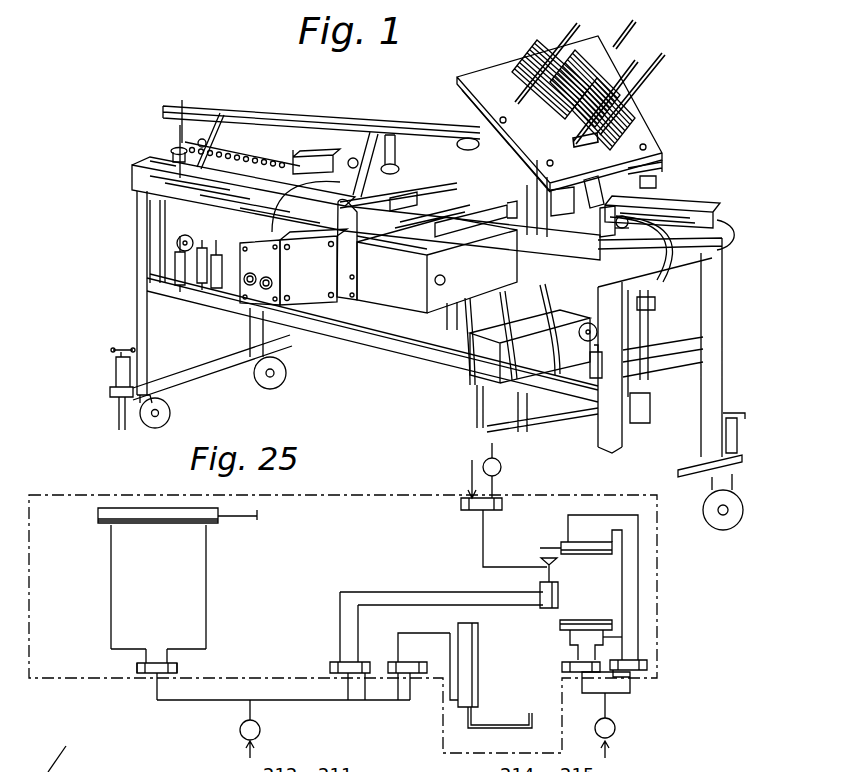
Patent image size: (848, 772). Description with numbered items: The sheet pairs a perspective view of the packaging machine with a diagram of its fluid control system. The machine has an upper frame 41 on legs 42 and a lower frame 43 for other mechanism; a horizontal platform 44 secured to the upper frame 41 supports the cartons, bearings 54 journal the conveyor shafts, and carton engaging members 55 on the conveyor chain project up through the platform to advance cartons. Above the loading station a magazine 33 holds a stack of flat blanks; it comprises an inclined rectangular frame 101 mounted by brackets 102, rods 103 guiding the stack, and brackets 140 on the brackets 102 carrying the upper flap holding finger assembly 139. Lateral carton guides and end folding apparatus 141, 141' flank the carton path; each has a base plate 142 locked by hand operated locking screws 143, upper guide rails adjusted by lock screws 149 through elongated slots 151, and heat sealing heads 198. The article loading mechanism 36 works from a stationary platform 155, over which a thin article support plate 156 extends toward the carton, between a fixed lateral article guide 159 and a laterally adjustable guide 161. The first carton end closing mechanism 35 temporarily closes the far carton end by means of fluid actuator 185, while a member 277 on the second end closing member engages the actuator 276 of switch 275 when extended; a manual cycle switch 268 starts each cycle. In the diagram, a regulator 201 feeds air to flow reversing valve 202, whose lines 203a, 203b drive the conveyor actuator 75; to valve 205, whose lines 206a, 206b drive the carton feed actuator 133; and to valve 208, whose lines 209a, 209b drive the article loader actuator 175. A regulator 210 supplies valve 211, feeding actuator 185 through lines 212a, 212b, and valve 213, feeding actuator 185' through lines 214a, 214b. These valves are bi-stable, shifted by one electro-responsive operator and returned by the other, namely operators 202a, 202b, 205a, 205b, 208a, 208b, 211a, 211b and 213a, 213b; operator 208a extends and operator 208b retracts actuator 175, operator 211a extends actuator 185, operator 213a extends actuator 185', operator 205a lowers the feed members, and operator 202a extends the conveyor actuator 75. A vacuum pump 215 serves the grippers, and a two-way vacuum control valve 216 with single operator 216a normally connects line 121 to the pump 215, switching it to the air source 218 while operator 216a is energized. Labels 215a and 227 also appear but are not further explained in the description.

In FIG. 1, the magazine 33 is at (503, 55).
In FIG. 1, the rods 103 is at (635, 33).
In FIG. 1, the frame 101 is at (637, 120).
In FIG. 1, the brackets 140 is at (662, 168).
In FIG. 1, the brackets 102 is at (657, 180).
In FIG. 1, the first carton end closing mechanism 35 is at (688, 194).
In FIG. 1, the member 277 is at (700, 186).
In FIG. 1, the legs 42 is at (722, 288).
In FIG. 1, the carton engaging members 55 is at (547, 287).
In FIG. 1, the second upper flap holding finger assembly 139 is at (503, 173).
In FIG. 1, the hand operated lock screws 149 is at (202, 138).
In FIG. 1, the vertically elongated slots 151 is at (210, 112).
In FIG. 1, the second lateral carton guide and end folding apparatus 141' is at (245, 122).
In FIG. 1, the first lateral carton guide and end folding apparatus 141 is at (321, 112).
In FIG. 1, the cycle switch 268 is at (390, 133).
In FIG. 1, the hand operated locking screws 143 is at (173, 150).
In FIG. 1, the base plate 142 is at (160, 157).
In FIG. 1, the platform 44 is at (133, 163).
In FIG. 1, the upper frame 41 is at (143, 183).
In FIG. 1, the bearings 54 is at (207, 216).
In FIG. 1, the fixed lateral article guide 159 is at (355, 213).
In FIG. 1, the article loading mechanism 36 is at (394, 264).
In FIG. 1, the thin article support plate 156 is at (420, 237).
In FIG. 1, the stationary platform 155 is at (472, 271).
In FIG. 1, the second laterally adjustable guide 161 is at (460, 219).
In FIG. 1, the actuator 276 is at (597, 218).
In FIG. 1, the switch 275 is at (601, 228).
In FIG. 1, the lower frame 43 is at (379, 349).
In FIG. 1, the heat sealing heads 198 is at (317, 157).
In FIG. 25, the source of air under pressure 218 is at (470, 470).
In FIG. 25, the vacuum pump 215 is at (501, 466).
In FIG. 25, the fluid actuator 185 is at (583, 508).
In FIG. 25, the electro-responsive operator 216a is at (463, 503).
In FIG. 25, the two-way vacuum control valve 216 is at (498, 510).
In FIG. 25, the line 121 is at (482, 546).
In FIG. 25, the carton feed actuator 133 is at (558, 596).
In FIG. 25, the fluid actuator 185' is at (590, 606).
In FIG. 25, the line 212a is at (623, 585).
In FIG. 25, the line 212b is at (639, 600).
In FIG. 25, the line 214a is at (639, 637).
In FIG. 25, the line 214b is at (571, 640).
In FIG. 25, the valve end 213b is at (562, 666).
In FIG. 25, the valve 213 is at (581, 681).
In FIG. 25, the valve operator 213a is at (608, 690).
In FIG. 25, the regulator 210 is at (616, 727).
In FIG. 25, the flow reversing valve 211 is at (636, 674).
In FIG. 25, the valve operator 211a is at (630, 682).
In FIG. 25, the valve end 211b is at (104, 771).
In FIG. 25, the article loader actuator 175 is at (474, 645).
In FIG. 25, the line 209b is at (428, 625).
In FIG. 25, the valve operator 208b is at (390, 662).
In FIG. 25, the flow reversing valve 208 is at (404, 662).
In FIG. 25, the line 209a is at (449, 690).
In FIG. 25, the valve operator 208a is at (404, 701).
In FIG. 25, the air line 205b is at (360, 694).
In FIG. 25, the flow reversing valve 205 is at (345, 655).
In FIG. 25, the valve operator 205a is at (331, 667).
In FIG. 25, the line 206a is at (378, 591).
In FIG. 25, the line 206b is at (375, 598).
In FIG. 25, the flow reversing valve 202 is at (153, 663).
In FIG. 25, the valve end 202b is at (177, 669).
In FIG. 25, the valve operator 202a is at (137, 668).
In FIG. 25, the regulator 201 is at (261, 727).
In FIG. 25, the line 203a is at (110, 572).
In FIG. 25, the line 203b is at (207, 587).
In FIG. 25, the conveyor actuator 75 is at (155, 523).
In FIG. 25, the air line 215a is at (73, 749).
In FIG. 25, the line 227 is at (99, 756).